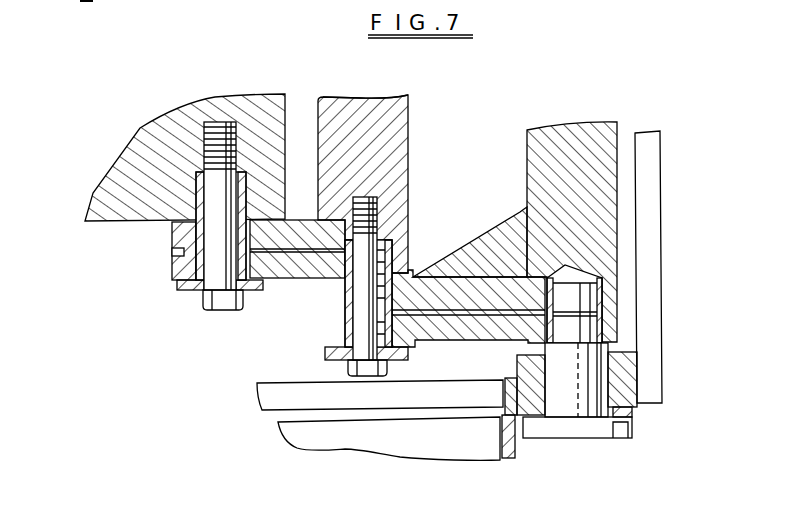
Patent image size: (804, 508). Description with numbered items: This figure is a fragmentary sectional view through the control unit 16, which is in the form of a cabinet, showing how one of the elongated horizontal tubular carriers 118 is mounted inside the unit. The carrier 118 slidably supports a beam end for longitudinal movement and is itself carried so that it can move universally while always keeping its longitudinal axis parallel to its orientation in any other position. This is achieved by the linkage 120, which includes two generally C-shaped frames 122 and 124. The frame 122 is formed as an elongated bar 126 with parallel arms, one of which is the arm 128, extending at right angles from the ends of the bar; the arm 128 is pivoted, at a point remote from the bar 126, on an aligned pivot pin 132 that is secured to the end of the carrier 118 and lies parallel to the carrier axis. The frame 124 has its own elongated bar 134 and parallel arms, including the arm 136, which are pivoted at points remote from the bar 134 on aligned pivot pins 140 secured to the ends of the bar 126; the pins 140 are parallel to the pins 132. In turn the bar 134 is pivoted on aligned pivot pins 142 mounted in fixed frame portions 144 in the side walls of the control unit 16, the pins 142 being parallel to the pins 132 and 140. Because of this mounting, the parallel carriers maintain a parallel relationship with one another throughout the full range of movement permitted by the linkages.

The control unit 16 is at (672, 407).
The tubular carrier 118 is at (105, 203).
The linkage 120 is at (562, 91).
The C-shaped frame 122 is at (400, 112).
The C-shaped frame 124 is at (608, 188).
The elongated bar 126 is at (400, 139).
The arm 128 is at (292, 268).
The pivot pin 132 is at (215, 228).
The elongated bar 134 is at (600, 120).
The arm 136 is at (486, 257).
The pivot pin 140 is at (387, 257).
The pivot pin 142 is at (578, 328).
The fixed frame portion 144 is at (623, 381).